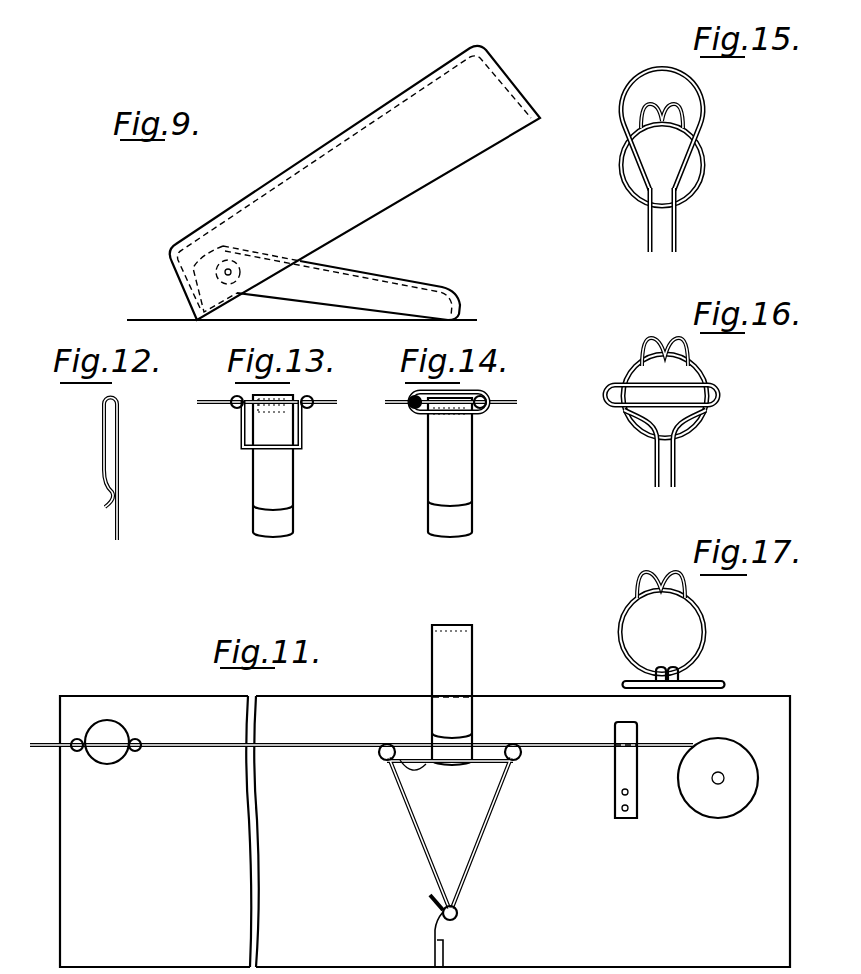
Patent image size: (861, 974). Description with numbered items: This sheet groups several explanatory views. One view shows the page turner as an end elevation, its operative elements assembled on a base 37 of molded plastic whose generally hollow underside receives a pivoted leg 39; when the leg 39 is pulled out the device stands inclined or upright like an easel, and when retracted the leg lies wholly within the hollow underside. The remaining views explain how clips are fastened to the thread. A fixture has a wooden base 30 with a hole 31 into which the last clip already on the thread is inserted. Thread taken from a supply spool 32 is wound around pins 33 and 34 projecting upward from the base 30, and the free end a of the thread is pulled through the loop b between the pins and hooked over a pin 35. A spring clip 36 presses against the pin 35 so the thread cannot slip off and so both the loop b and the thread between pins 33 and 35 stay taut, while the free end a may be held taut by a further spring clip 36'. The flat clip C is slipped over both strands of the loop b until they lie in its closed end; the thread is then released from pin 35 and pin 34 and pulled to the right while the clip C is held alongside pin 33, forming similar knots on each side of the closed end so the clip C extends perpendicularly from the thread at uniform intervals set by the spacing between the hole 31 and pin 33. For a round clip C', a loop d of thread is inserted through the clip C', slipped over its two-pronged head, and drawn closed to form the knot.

In FIG. 9, the base 37 is at (350, 132).
In FIG. 9, the leg 39 is at (405, 283).
In FIG. 11, the base 30 is at (72, 852).
In FIG. 11, the hole 31 is at (118, 722).
In FIG. 11, the supply spool 32 is at (745, 757).
In FIG. 11, the pin 33 is at (380, 757).
In FIG. 11, the pin 34 is at (521, 757).
In FIG. 11, the pin 35 is at (462, 913).
In FIG. 11, the spring clip 36 is at (416, 931).
In FIG. 11, the spring clip 36' is at (605, 770).
In FIG. 12, the clip C is at (90, 469).
In FIG. 13, the clip C is at (292, 466).
In FIG. 14, the clip C is at (471, 467).
In FIG. 11, the clip C is at (289, 711).
In FIG. 15, the round clip C' is at (637, 165).
In FIG. 16, the round clip C' is at (639, 388).
In FIG. 17, the round clip C' is at (638, 623).
In FIG. 15, the rod / base T is at (650, 237).
In FIG. 16, the rod / base T is at (655, 465).
In FIG. 17, the rod / base T is at (710, 680).
In FIG. 11, the rod / base T is at (296, 744).
In FIG. 13, the free end of the thread a is at (262, 450).
In FIG. 14, the free end of the thread a is at (472, 393).
In FIG. 11, the free end of the thread a is at (487, 834).
In FIG. 13, the loop b is at (270, 420).
In FIG. 14, the loop b is at (440, 410).
In FIG. 11, the loop b is at (420, 762).
In FIG. 15, the loop d is at (637, 69).
In FIG. 16, the loop d is at (692, 384).
In FIG. 17, the loop d is at (650, 672).